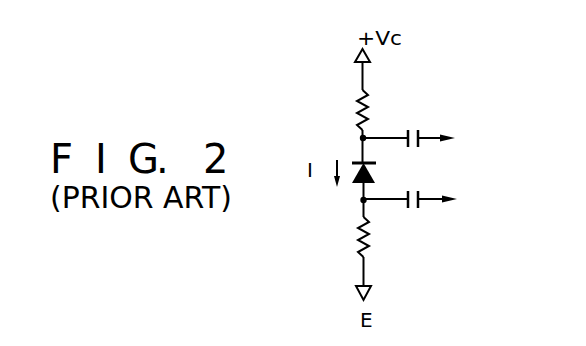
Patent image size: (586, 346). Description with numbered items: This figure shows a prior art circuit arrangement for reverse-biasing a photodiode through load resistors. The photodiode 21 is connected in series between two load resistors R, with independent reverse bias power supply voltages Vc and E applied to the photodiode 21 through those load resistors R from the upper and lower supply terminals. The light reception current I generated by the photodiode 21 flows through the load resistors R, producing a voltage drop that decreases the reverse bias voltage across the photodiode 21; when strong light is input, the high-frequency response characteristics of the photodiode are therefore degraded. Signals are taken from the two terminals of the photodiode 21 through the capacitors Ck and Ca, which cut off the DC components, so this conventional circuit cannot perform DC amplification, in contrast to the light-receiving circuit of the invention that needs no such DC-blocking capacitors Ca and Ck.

The photodiode 21 is at (377, 171).
The load resistor R is at (350, 111).
The capacitor Ck is at (413, 126).
The capacitor Ca is at (420, 208).